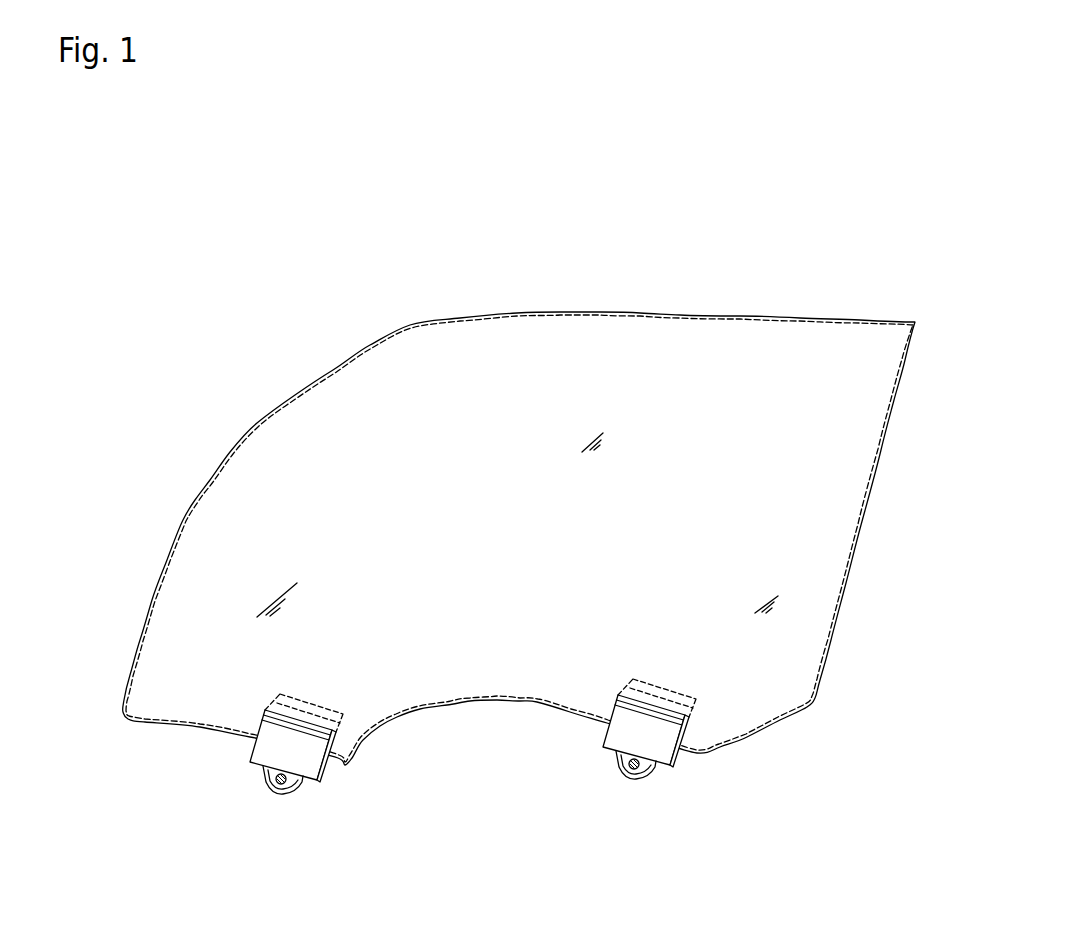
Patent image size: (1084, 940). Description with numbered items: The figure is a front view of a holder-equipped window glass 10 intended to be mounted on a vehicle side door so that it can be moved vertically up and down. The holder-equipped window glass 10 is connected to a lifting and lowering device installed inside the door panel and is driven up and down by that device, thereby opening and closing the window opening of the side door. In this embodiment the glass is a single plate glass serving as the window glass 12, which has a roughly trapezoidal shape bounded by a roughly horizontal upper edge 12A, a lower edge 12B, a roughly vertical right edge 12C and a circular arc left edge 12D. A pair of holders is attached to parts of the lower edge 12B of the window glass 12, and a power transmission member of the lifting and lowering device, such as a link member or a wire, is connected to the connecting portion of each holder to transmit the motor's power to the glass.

The holder-equipped window glass 10 is at (525, 474).
The window glass 12 is at (839, 312).
The upper edge 12A is at (719, 312).
The lower edge 12B is at (500, 704).
The right edge 12C is at (875, 500).
The left edge 12D is at (162, 565).